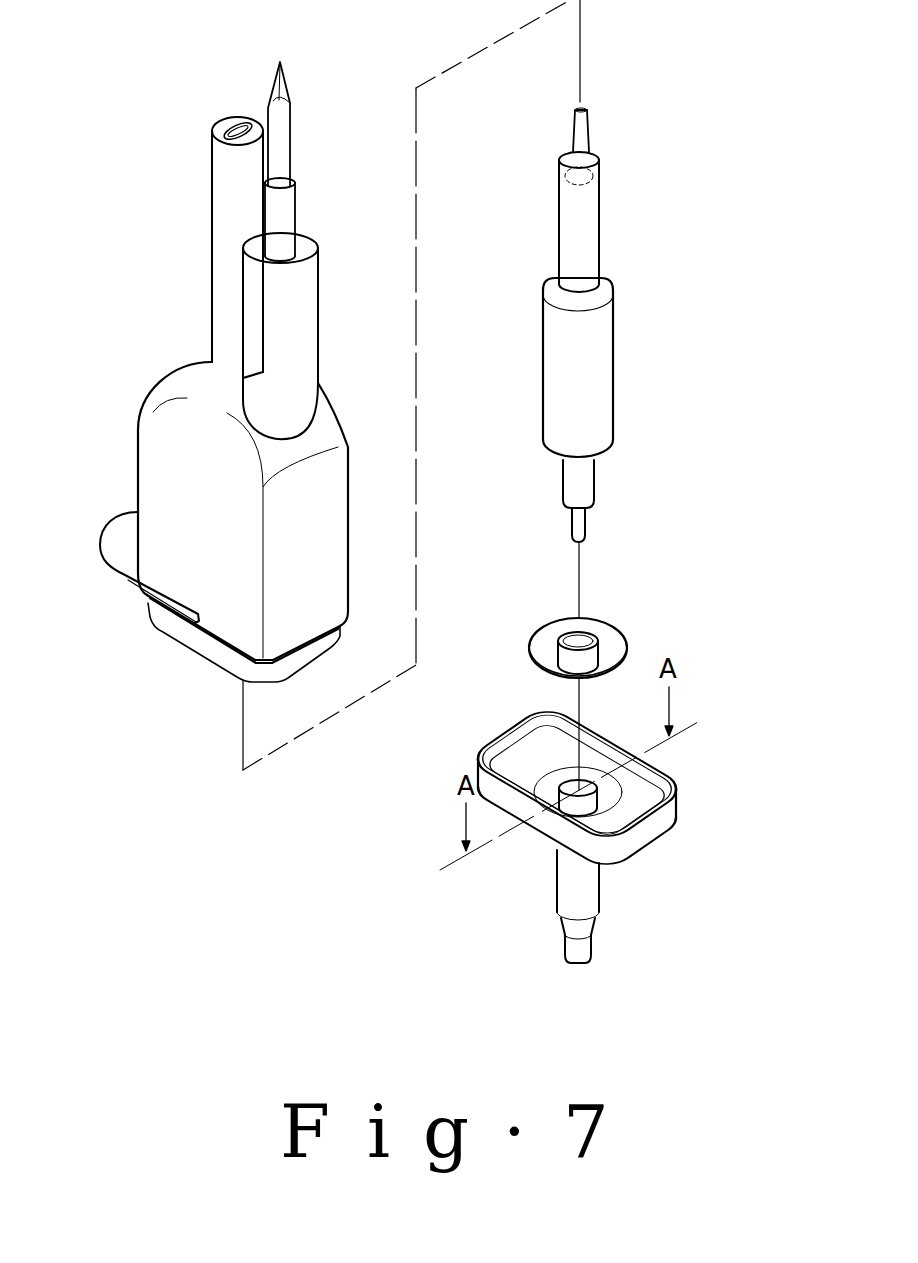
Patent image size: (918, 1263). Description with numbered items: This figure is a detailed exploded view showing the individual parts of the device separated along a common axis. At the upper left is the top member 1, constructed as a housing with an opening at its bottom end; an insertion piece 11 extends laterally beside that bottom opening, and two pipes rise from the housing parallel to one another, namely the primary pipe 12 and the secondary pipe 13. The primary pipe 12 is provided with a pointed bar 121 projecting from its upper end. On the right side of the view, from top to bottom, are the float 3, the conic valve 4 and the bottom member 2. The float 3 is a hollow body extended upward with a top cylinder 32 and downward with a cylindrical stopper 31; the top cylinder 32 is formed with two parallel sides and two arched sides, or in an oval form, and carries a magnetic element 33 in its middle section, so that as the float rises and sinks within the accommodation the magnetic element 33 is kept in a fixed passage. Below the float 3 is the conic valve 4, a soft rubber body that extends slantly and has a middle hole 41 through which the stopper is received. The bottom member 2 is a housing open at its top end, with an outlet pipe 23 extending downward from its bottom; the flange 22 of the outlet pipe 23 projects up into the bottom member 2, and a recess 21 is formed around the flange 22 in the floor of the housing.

The top member 1 is at (180, 472).
The insertion piece 11 is at (125, 548).
The primary pipe 12 is at (288, 350).
The pointed bar 121 is at (281, 143).
The secondary pipe 13 is at (237, 190).
The bottom member 2 is at (635, 860).
The recess 21 is at (610, 798).
The flange 22 is at (585, 792).
The outlet pipe 23 is at (578, 890).
The float 3 is at (622, 357).
The cylindrical stopper 31 is at (583, 482).
The top cylinder 32 is at (578, 237).
The magnetic element 33 is at (577, 177).
The conic valve 4 is at (633, 632).
The middle hole 41 is at (568, 640).